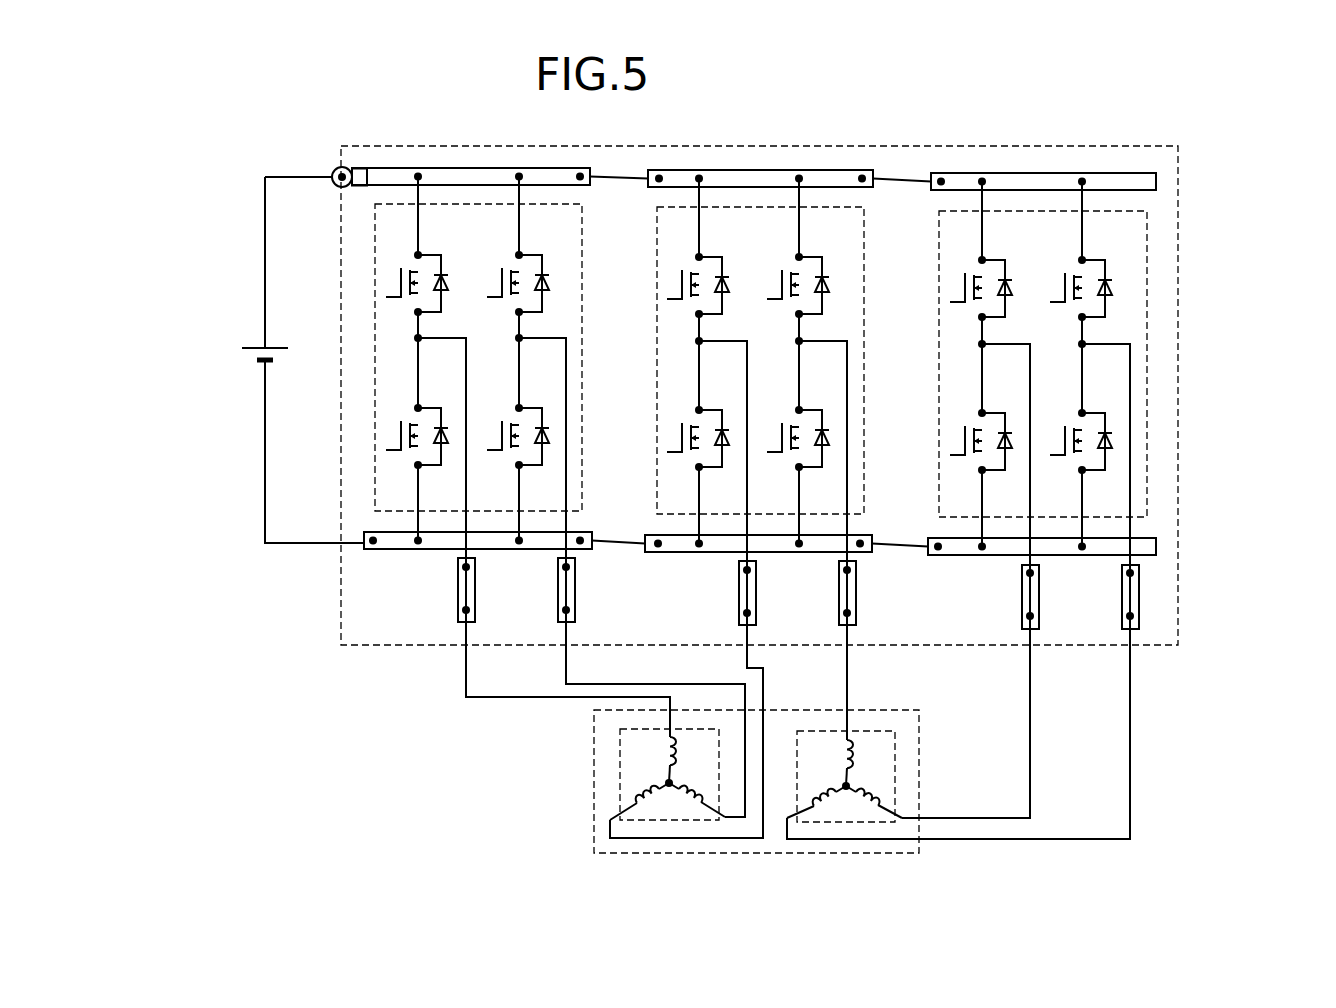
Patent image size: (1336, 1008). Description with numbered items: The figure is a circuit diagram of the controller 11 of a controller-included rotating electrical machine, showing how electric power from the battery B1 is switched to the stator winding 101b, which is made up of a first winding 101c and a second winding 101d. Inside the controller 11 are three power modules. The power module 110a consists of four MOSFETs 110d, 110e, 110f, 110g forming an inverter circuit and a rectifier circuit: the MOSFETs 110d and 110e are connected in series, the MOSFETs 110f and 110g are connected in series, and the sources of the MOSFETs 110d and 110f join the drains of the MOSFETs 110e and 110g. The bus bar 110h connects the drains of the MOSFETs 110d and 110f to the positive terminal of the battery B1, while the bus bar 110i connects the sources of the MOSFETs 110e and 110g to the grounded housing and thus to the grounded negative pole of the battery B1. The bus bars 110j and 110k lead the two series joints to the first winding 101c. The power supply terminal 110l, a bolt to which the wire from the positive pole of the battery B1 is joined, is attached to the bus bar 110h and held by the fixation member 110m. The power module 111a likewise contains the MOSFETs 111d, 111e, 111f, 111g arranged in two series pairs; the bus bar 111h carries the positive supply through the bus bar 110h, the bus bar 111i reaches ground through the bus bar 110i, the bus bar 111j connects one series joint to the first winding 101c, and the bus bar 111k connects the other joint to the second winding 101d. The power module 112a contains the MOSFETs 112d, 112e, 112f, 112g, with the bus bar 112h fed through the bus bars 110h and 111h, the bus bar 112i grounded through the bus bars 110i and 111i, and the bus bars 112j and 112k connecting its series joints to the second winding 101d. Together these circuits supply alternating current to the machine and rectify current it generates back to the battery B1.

The controller 11 is at (905, 146).
The battery B1 is at (250, 345).
The stator winding 101b is at (594, 764).
The first winding 101c is at (620, 792).
The second winding 101d is at (895, 760).
The power module 110a is at (375, 330).
The MOSFET 110d is at (393, 278).
The MOSFET 110e is at (392, 422).
The MOSFET 110f is at (490, 280).
The MOSFET 110g is at (488, 427).
The bus bar 110h is at (476, 168).
The bus bar 110i is at (395, 549).
The bus bar 110j is at (470, 597).
The bus bar 110k is at (570, 598).
The power supply terminal 110l is at (333, 174).
The fixation member 110m is at (360, 168).
The power module 111a is at (657, 332).
The MOSFET 111d is at (674, 280).
The MOSFET 111e is at (673, 424).
The MOSFET 111f is at (771, 282).
The MOSFET 111g is at (768, 429).
The bus bar 111h is at (750, 170).
The bus bar 111i is at (685, 552).
The bus bar 111j is at (751, 600).
The bus bar 111k is at (898, 588).
The power module 112a is at (939, 335).
The MOSFET 112d is at (957, 283).
The MOSFET 112e is at (956, 427).
The MOSFET 112f is at (1054, 285).
The MOSFET 112g is at (1051, 432).
The bus bar 112h is at (1032, 173).
The bus bar 112i is at (965, 555).
The bus bar 112j is at (1082, 590).
The bus bar 112k is at (1139, 600).